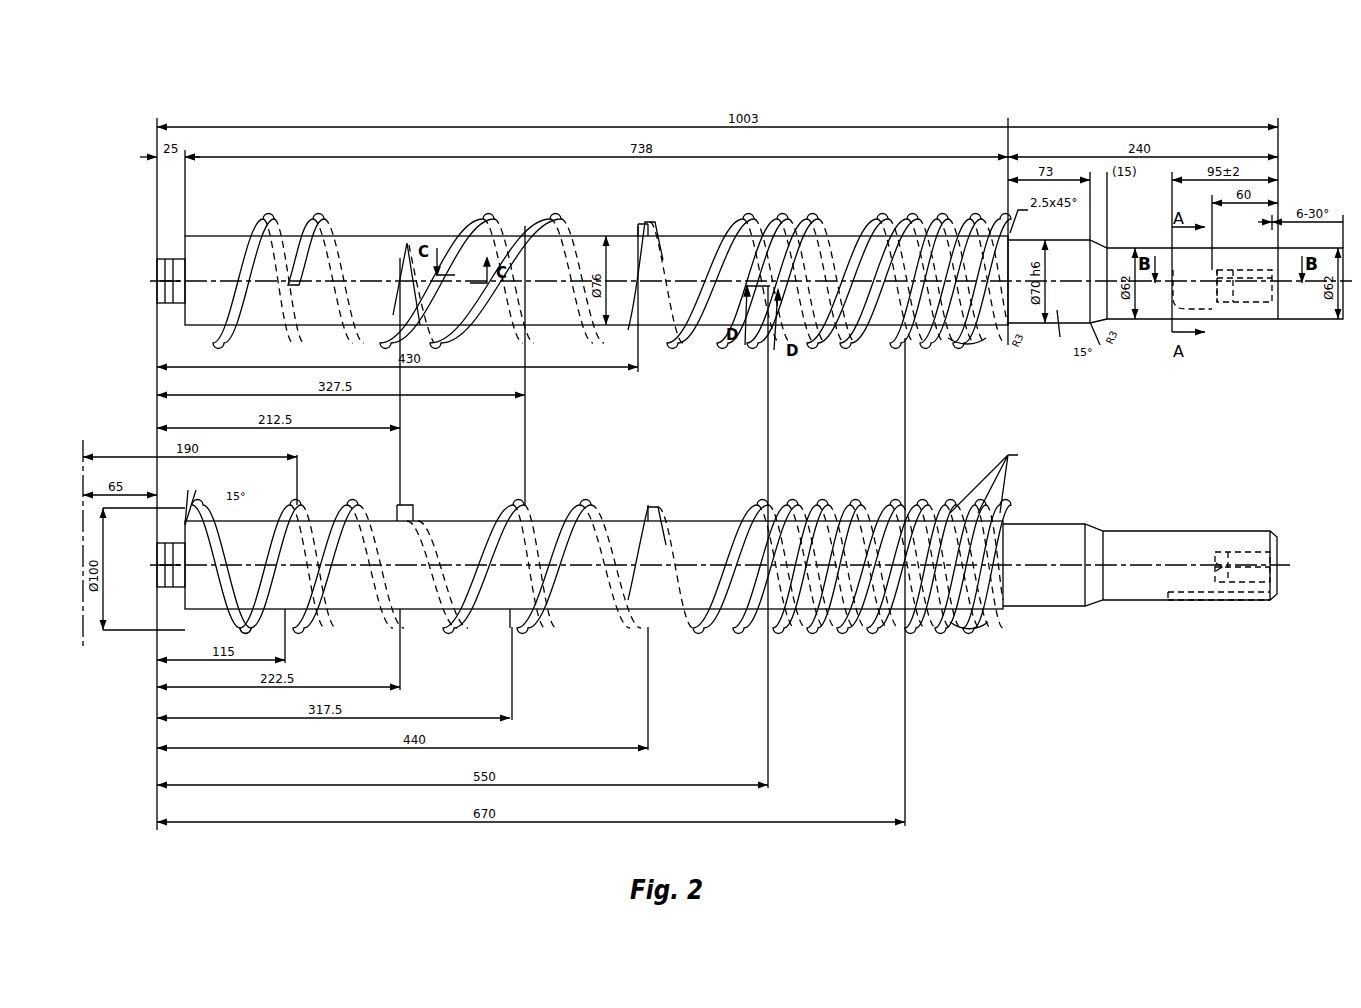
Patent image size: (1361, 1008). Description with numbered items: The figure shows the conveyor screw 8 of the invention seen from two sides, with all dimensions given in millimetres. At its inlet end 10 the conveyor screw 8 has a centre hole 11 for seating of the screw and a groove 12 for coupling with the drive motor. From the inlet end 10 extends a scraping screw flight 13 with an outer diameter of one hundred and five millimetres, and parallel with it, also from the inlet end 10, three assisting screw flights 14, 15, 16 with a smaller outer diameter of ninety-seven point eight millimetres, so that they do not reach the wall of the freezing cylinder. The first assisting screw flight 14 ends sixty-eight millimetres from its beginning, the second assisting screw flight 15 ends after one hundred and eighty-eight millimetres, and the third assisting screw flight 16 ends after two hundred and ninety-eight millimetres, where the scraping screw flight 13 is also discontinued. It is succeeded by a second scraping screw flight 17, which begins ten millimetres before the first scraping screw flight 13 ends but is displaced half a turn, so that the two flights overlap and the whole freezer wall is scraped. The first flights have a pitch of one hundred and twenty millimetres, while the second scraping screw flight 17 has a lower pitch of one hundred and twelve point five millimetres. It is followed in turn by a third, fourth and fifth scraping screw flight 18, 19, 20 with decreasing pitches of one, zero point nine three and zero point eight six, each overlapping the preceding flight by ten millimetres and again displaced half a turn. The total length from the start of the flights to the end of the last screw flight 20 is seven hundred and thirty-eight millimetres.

The conveyor screw 8 is at (392, 182).
The inlet end 10 is at (1033, 360).
The centre hole 11 is at (1262, 294).
The groove 12 is at (1192, 293).
The scraping screw flight 13 is at (953, 338).
The first assisting screw flight 14 is at (975, 230).
The second assisting screw flight 15 is at (937, 230).
The third assisting screw flight 16 is at (900, 230).
The second scraping screw flight 17 is at (556, 228).
The third scraping screw flight 18 is at (490, 230).
The fourth scraping screw flight 19 is at (345, 195).
The fifth scraping screw flight 20 is at (264, 226).